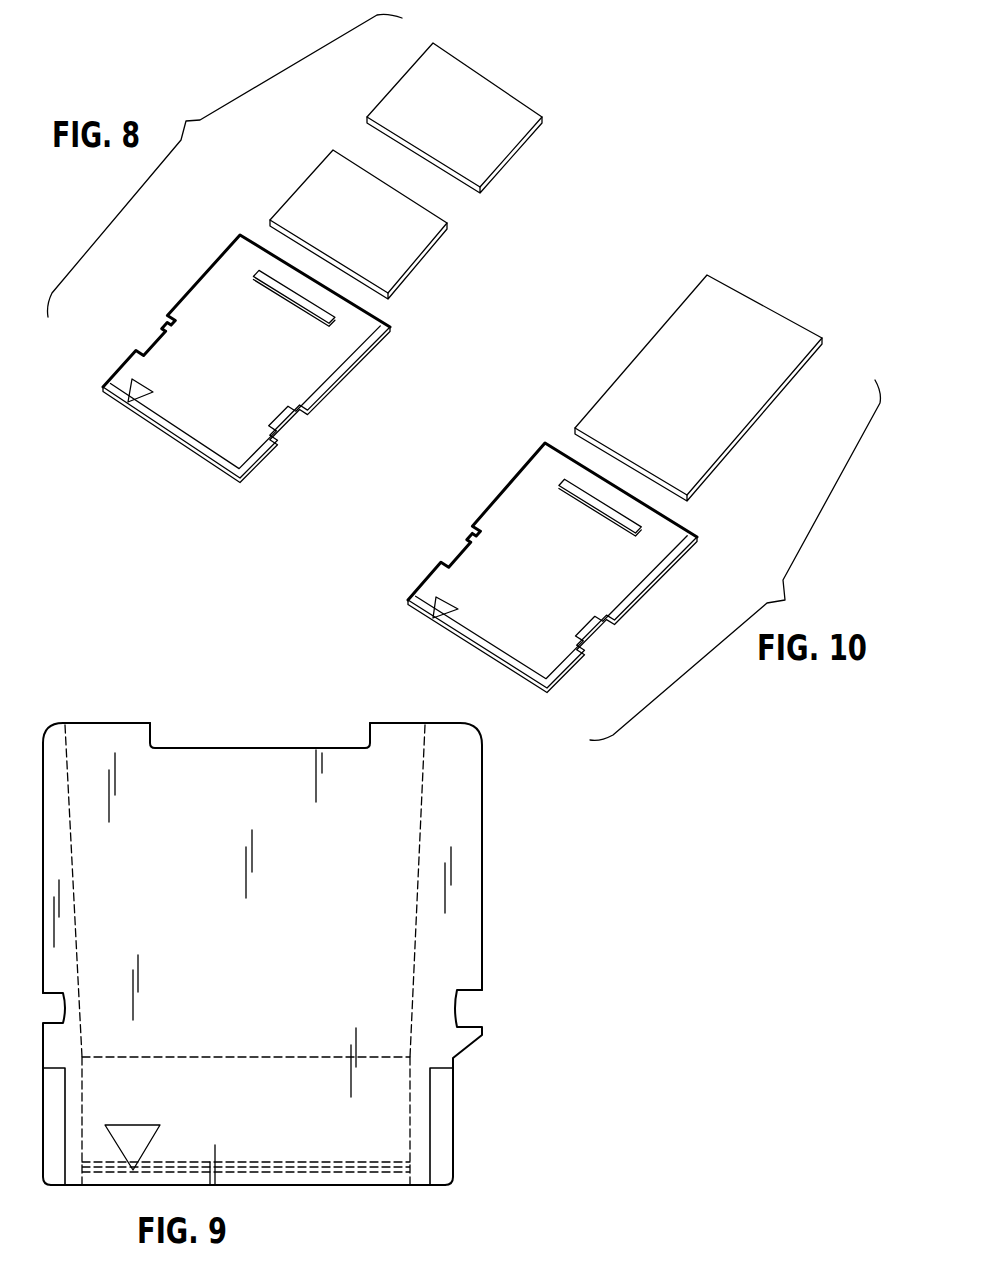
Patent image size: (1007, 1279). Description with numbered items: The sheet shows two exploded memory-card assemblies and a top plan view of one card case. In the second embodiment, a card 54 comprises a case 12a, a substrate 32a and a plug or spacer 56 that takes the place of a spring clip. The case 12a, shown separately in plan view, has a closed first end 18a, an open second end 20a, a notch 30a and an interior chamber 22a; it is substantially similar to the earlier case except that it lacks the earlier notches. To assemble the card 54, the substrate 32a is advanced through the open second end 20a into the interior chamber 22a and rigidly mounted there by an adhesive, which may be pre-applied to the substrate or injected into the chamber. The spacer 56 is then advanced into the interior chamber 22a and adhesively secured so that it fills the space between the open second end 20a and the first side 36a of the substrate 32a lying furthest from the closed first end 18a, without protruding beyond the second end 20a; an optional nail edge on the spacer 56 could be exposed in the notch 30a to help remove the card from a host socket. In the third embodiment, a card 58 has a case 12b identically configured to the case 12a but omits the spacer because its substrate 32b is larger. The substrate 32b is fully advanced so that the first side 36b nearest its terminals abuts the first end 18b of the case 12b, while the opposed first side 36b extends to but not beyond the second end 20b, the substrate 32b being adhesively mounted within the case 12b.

In FIG. 8, the case 12a is at (126, 419).
In FIG. 9, the case 12a is at (309, 954).
In FIG. 10, the case 12b is at (511, 569).
In FIG. 9, the closed first end 18a is at (327, 1187).
In FIG. 10, the first end 18b is at (519, 680).
In FIG. 9, the open second end 20a is at (108, 722).
In FIG. 10, the second end 20b is at (543, 442).
In FIG. 9, the interior chamber 22a is at (401, 756).
In FIG. 9, the notch 30a is at (266, 736).
In FIG. 8, the substrate 32a is at (343, 248).
In FIG. 10, the substrate 32b is at (711, 391).
In FIG. 8, the first side 36a is at (428, 207).
In FIG. 10, the first side 36b is at (781, 310).
In FIG. 8, the card 54 is at (343, 248).
In FIG. 8, the spacer 56 is at (494, 70).
In FIG. 10, the card 58 is at (711, 391).